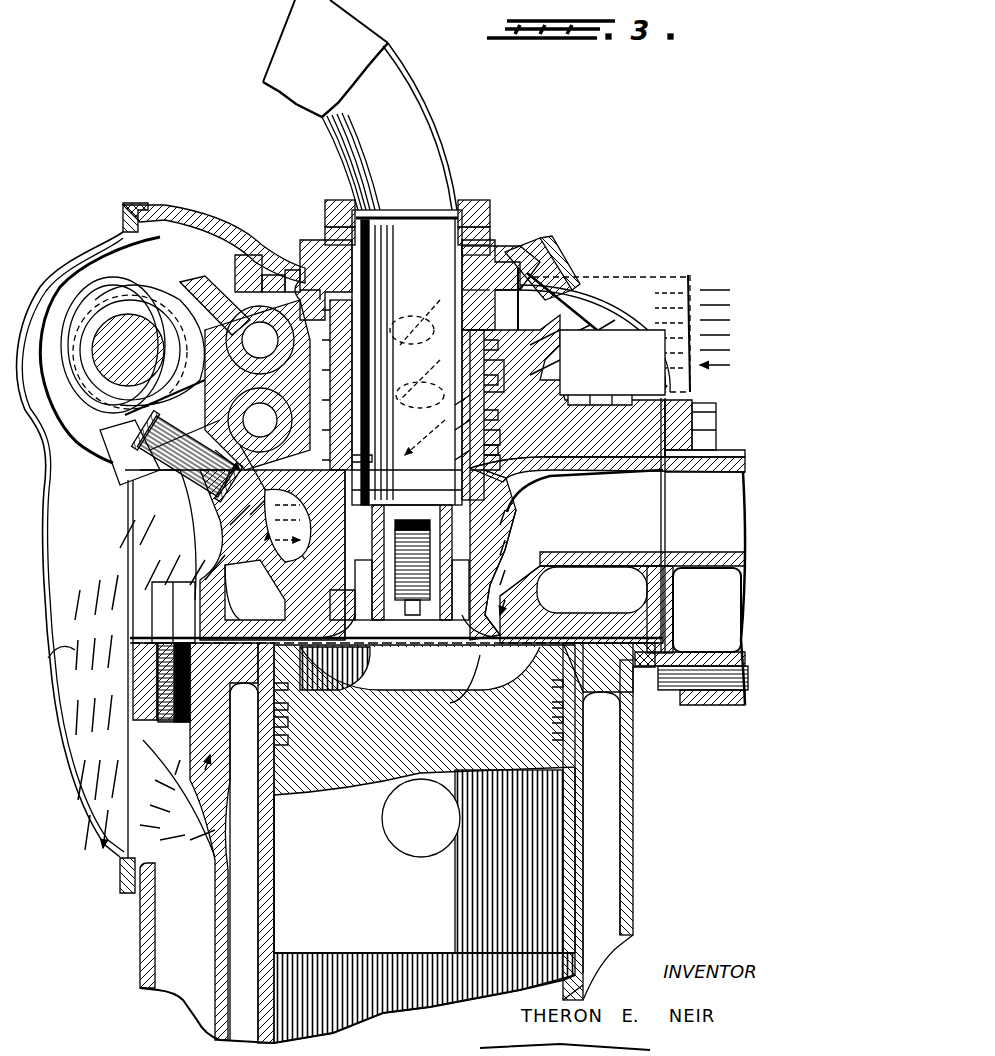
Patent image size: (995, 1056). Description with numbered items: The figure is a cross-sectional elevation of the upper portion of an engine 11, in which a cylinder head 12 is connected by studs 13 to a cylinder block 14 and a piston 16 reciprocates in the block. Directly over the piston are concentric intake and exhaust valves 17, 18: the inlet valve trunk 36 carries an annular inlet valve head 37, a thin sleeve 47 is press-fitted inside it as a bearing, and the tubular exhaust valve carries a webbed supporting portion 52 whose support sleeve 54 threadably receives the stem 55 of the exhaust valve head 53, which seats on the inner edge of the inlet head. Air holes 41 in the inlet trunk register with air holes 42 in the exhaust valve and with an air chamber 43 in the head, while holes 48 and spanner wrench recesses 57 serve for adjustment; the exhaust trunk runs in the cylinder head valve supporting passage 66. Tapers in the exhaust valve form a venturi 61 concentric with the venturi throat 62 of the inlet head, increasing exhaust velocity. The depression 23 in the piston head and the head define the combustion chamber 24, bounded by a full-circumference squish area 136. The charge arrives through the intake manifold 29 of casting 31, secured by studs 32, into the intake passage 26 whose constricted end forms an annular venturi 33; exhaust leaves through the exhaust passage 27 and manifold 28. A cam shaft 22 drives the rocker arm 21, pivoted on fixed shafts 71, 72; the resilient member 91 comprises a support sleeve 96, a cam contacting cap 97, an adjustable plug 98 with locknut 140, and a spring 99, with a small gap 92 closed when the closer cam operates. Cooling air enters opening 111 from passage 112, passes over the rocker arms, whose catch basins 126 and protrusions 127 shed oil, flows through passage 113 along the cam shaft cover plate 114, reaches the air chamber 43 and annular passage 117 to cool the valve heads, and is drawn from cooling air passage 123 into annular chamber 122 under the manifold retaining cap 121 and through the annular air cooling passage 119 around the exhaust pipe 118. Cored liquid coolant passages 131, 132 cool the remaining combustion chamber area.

The upper portion of engine 11 is at (165, 218).
The cylinder head 12 is at (210, 235).
The studs 13 is at (248, 254).
The cylinder block 14 is at (630, 845).
The piston 16 is at (570, 830).
The intake valve 17 is at (330, 596).
The exhaust valve 18 is at (328, 262).
The rocker arm 21 is at (190, 282).
The cam shaft 22 is at (125, 330).
The central depression of piston head 23 is at (460, 700).
The combustion chamber 24 is at (424, 844).
The intake passage 26 is at (610, 488).
The exhaust passage 27 is at (407, 357).
The exhaust manifold 28 is at (455, 150).
The intake manifold 29 is at (720, 480).
The manifold casting 31 is at (755, 470).
The studs 32 is at (705, 412).
The annular venturi 33 is at (500, 585).
The inlet valve trunk 36 is at (478, 565).
The inlet valve head 37 is at (470, 641).
The air holes 41 is at (480, 480).
The air holes 42 is at (375, 458).
The air chamber 43 is at (500, 530).
The sleeve 47 is at (480, 455).
The holes 48 is at (475, 445).
The webbed valve supporting portion 52 is at (451, 590).
The exhaust valve head 53 is at (350, 645).
The support sleeve 54 is at (369, 590).
The stem 55 is at (410, 540).
The spanner wrench recesses 57 is at (470, 385).
The venturi 61 is at (440, 522).
The venturi throat 62 is at (338, 620).
The cylinder head valve supporting passage 66 is at (318, 274).
The fixed shaft 71 is at (260, 420).
The fixed shaft 72 is at (260, 340).
The resilient member 91 is at (140, 458).
The space gap 92 is at (200, 500).
The support sleeve 96 is at (170, 465).
The cam contacting cap 97 is at (210, 485).
The adjustable plug 98 is at (160, 490).
The spring 99 is at (240, 500).
The opening 111 is at (565, 280).
The passage 112 is at (655, 292).
The passage 113 is at (70, 630).
The cam shaft cover plate 114 is at (50, 660).
The annular passage 117 is at (320, 548).
The exhaust pipe 118 is at (460, 250).
The annular air cooling passage 119 is at (462, 290).
The manifold retaining cap 121 is at (500, 190).
The annular chamber 122 is at (345, 216).
The cooling air passage 123 is at (495, 262).
The catch basins 126 is at (270, 272).
The protrusions 127 is at (290, 270).
The liquid coolant passage 131 is at (622, 602).
The liquid coolant passage 132 is at (254, 590).
The squish area 136 is at (603, 832).
The locknut 140 is at (215, 470).